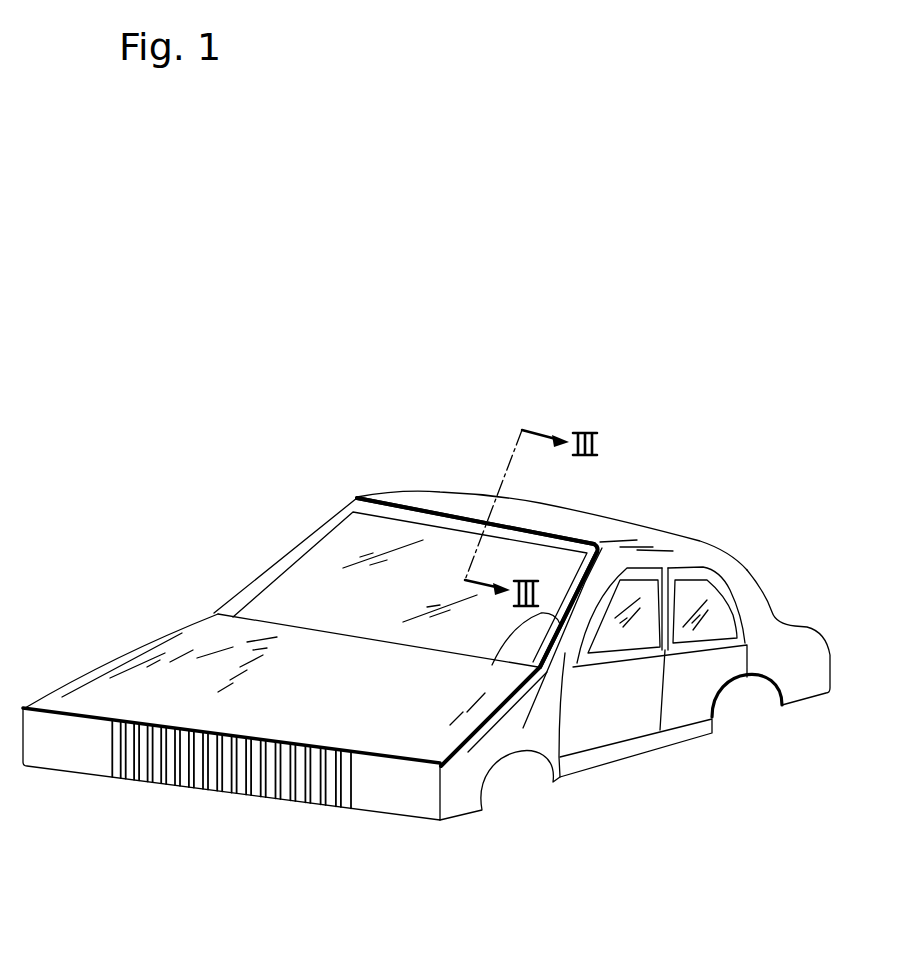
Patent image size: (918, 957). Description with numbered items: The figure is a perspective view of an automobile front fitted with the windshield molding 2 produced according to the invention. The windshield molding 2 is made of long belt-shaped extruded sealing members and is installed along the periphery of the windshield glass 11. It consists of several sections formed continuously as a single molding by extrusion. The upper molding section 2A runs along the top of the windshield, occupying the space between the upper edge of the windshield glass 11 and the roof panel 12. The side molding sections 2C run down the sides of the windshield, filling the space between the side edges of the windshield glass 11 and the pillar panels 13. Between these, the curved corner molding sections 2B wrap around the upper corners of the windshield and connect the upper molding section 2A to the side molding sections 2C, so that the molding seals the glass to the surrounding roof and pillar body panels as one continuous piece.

The windshield molding 2 is at (372, 502).
The upper molding section 2A is at (415, 507).
The curved corner molding section 2B is at (607, 542).
The side molding section 2C is at (492, 665).
The windshield glass 11 is at (334, 575).
The roof panel 12 is at (590, 513).
The pillar panel 13 is at (567, 658).